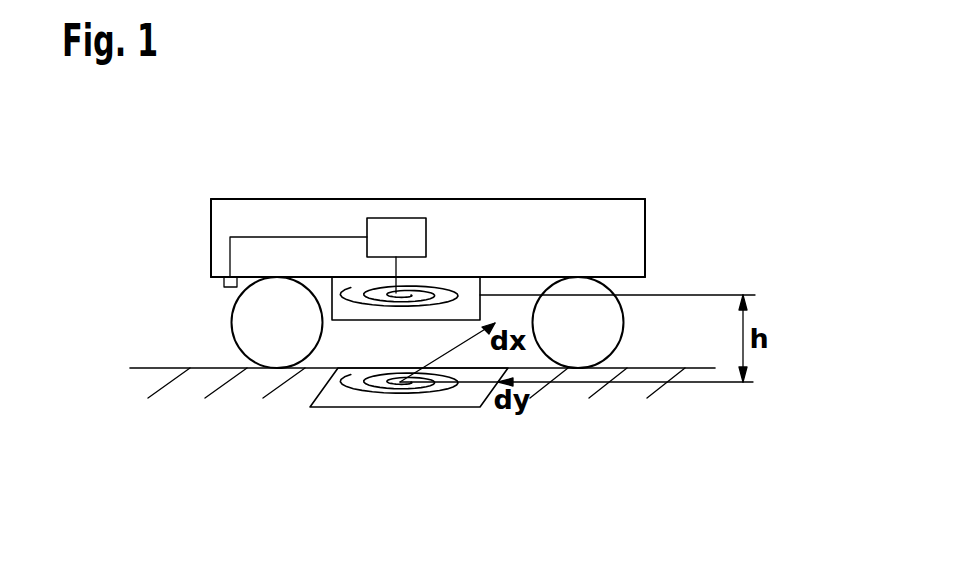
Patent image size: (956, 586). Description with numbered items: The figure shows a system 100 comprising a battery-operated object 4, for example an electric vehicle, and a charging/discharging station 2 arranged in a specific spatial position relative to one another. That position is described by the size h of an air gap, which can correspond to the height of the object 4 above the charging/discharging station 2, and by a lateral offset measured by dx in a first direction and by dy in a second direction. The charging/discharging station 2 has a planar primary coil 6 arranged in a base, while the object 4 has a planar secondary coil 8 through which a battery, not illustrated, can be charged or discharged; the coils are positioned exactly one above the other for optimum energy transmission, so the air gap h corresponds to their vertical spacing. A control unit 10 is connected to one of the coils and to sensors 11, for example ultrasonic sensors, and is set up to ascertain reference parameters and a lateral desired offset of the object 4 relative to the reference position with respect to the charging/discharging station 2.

The system 100 is at (707, 215).
The battery-operated object 4 is at (211, 216).
The control unit 10 is at (410, 218).
The sensors 11 is at (224, 285).
The secondary coil 8 is at (458, 288).
The charging/discharging station 2 is at (155, 377).
The primary coil 6 is at (415, 405).